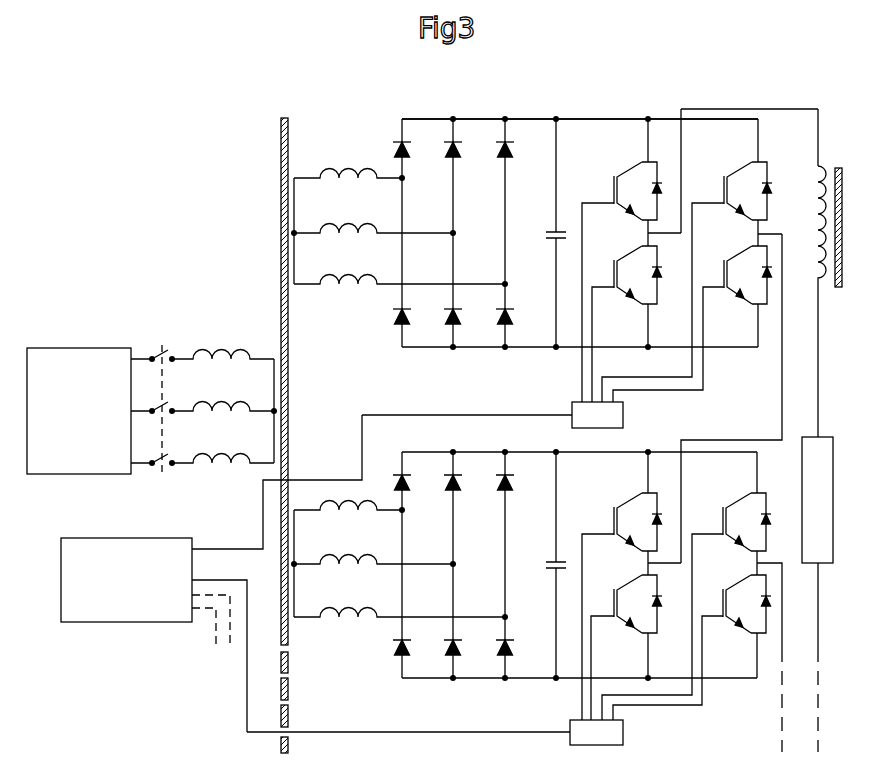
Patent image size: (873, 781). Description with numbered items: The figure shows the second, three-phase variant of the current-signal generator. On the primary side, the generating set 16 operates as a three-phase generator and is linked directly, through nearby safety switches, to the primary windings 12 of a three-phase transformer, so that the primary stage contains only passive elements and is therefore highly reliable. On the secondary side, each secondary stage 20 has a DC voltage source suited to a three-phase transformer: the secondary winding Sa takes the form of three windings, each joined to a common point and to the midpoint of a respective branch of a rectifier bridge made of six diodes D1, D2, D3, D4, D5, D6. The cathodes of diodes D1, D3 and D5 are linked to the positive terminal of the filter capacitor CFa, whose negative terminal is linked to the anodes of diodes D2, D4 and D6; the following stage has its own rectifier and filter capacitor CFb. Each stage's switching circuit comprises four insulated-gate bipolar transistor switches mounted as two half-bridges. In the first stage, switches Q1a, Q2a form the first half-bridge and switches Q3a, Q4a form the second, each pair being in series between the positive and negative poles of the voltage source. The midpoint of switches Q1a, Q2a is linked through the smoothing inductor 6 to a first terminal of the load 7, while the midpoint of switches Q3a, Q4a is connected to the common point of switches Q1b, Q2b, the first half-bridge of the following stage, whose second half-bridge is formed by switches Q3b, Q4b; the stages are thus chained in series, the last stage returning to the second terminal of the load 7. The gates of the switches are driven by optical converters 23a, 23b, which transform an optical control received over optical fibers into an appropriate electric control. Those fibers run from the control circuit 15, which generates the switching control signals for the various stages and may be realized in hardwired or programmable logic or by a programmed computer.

The secondary stage 20 is at (559, 93).
The secondary winding Sa is at (348, 203).
The diode D1 is at (398, 152).
The diode D2 is at (398, 322).
The diode D3 is at (450, 152).
The diode D4 is at (450, 322).
The diode D5 is at (503, 152).
The diode D6 is at (503, 322).
The filter capacitor CFa is at (550, 232).
The filter capacitor CFb is at (550, 562).
The switch Q1a is at (637, 178).
The switch Q2a is at (637, 288).
The switch Q3a is at (747, 178).
The switch Q4a is at (747, 288).
The switch Q1b is at (637, 511).
The switch Q2b is at (637, 618).
The switch Q3b is at (747, 511).
The switch Q4b is at (747, 618).
The optical converter 23a is at (597, 415).
The optical converter 23b is at (596, 732).
The control circuit 15 is at (126, 580).
The generating set 16 is at (65, 380).
The primary windings 12 is at (220, 380).
The smoothing inductor 6 is at (830, 223).
The load 7 is at (823, 510).